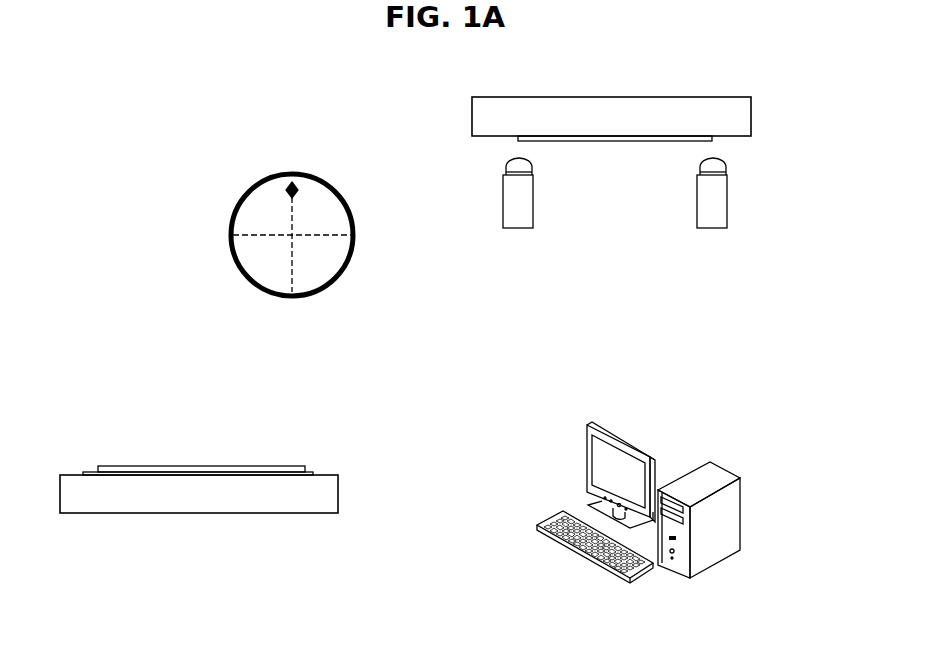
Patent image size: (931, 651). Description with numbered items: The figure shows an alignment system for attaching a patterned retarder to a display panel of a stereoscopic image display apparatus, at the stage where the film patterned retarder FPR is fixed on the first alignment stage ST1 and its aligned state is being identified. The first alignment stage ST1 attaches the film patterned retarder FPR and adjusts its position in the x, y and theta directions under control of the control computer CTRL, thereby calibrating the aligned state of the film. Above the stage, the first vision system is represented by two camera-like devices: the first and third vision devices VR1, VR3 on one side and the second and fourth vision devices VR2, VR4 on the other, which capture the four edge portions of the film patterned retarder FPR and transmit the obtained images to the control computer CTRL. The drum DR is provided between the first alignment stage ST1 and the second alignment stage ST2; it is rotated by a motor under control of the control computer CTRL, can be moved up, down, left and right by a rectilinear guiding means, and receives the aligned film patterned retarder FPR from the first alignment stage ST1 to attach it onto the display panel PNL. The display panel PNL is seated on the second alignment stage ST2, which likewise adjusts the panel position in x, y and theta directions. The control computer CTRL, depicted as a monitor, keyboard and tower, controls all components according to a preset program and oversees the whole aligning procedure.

The first alignment stage ST1 is at (472, 115).
The film patterned retarder FPR is at (620, 141).
The first vision device of first vision system VR1 is at (484, 262).
The third vision device of first vision system VR3 is at (520, 222).
The second vision device of first vision system VR2 is at (722, 262).
The fourth vision device of first vision system VR4 is at (712, 222).
The drum DR is at (290, 298).
The second alignment stage ST2 is at (338, 492).
The display panel PNL is at (258, 466).
The control computer CTRL is at (686, 461).